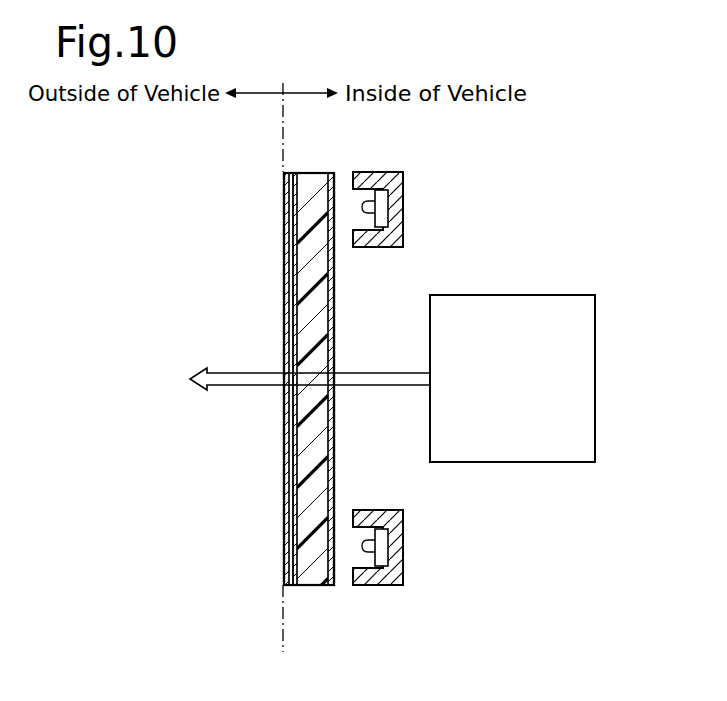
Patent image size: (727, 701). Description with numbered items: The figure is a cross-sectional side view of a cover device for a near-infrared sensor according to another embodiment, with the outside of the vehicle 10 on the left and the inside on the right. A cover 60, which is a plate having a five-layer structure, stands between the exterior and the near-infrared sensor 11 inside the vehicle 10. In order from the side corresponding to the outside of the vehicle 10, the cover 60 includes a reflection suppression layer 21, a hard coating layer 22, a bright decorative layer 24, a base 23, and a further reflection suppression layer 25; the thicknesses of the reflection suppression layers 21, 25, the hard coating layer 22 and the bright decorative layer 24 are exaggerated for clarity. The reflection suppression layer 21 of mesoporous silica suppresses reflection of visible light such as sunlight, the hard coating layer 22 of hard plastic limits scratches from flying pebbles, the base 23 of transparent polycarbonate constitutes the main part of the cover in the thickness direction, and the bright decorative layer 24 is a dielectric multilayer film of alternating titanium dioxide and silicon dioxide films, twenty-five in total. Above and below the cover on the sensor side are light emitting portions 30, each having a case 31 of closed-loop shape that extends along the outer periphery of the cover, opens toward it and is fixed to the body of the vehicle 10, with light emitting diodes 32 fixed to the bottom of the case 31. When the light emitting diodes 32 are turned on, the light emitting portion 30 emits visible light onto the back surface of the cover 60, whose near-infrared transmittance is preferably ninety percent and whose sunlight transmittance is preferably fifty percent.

The vehicle 10 is at (283, 120).
The near-infrared sensor 11 is at (510, 295).
The reflection suppression layer 21 is at (285, 422).
The hard coating layer 22 is at (290, 470).
The base 23 is at (313, 585).
The bright decorative layer 24 is at (294, 525).
The reflection suppression layer 25 is at (335, 477).
The light emitting portion 30 is at (431, 377).
The case 31 is at (385, 176).
The light emitting diodes 32 is at (383, 203).
The cover 60 is at (305, 382).